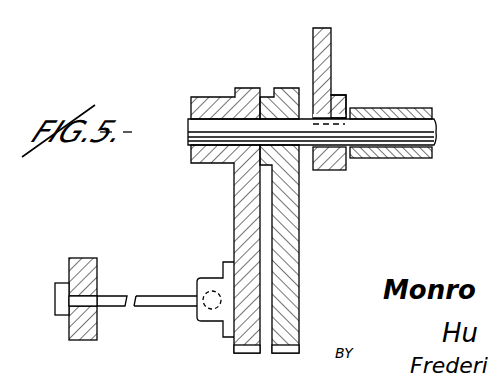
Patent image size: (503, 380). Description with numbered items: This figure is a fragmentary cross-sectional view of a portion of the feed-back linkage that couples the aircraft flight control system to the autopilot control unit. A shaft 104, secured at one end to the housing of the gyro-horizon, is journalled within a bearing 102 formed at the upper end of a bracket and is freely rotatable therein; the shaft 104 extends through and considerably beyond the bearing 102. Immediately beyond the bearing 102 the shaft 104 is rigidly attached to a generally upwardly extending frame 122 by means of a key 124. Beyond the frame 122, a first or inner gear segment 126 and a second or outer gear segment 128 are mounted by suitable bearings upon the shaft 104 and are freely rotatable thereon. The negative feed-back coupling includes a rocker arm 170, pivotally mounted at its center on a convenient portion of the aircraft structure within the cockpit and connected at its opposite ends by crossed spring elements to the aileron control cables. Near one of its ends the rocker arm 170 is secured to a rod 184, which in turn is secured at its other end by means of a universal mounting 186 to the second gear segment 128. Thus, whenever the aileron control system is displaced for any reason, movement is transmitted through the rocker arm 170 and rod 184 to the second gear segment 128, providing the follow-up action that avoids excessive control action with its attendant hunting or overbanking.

The bearing 102 is at (421, 112).
The shaft 104 is at (434, 131).
The frame 122 is at (313, 50).
The key 124 is at (326, 117).
The first or inner gear segment 126 is at (282, 249).
The second or outer gear segment 128 is at (242, 216).
The rocker arm 170 is at (82, 326).
The rod 184 is at (155, 284).
The universal mounting 186 is at (205, 278).